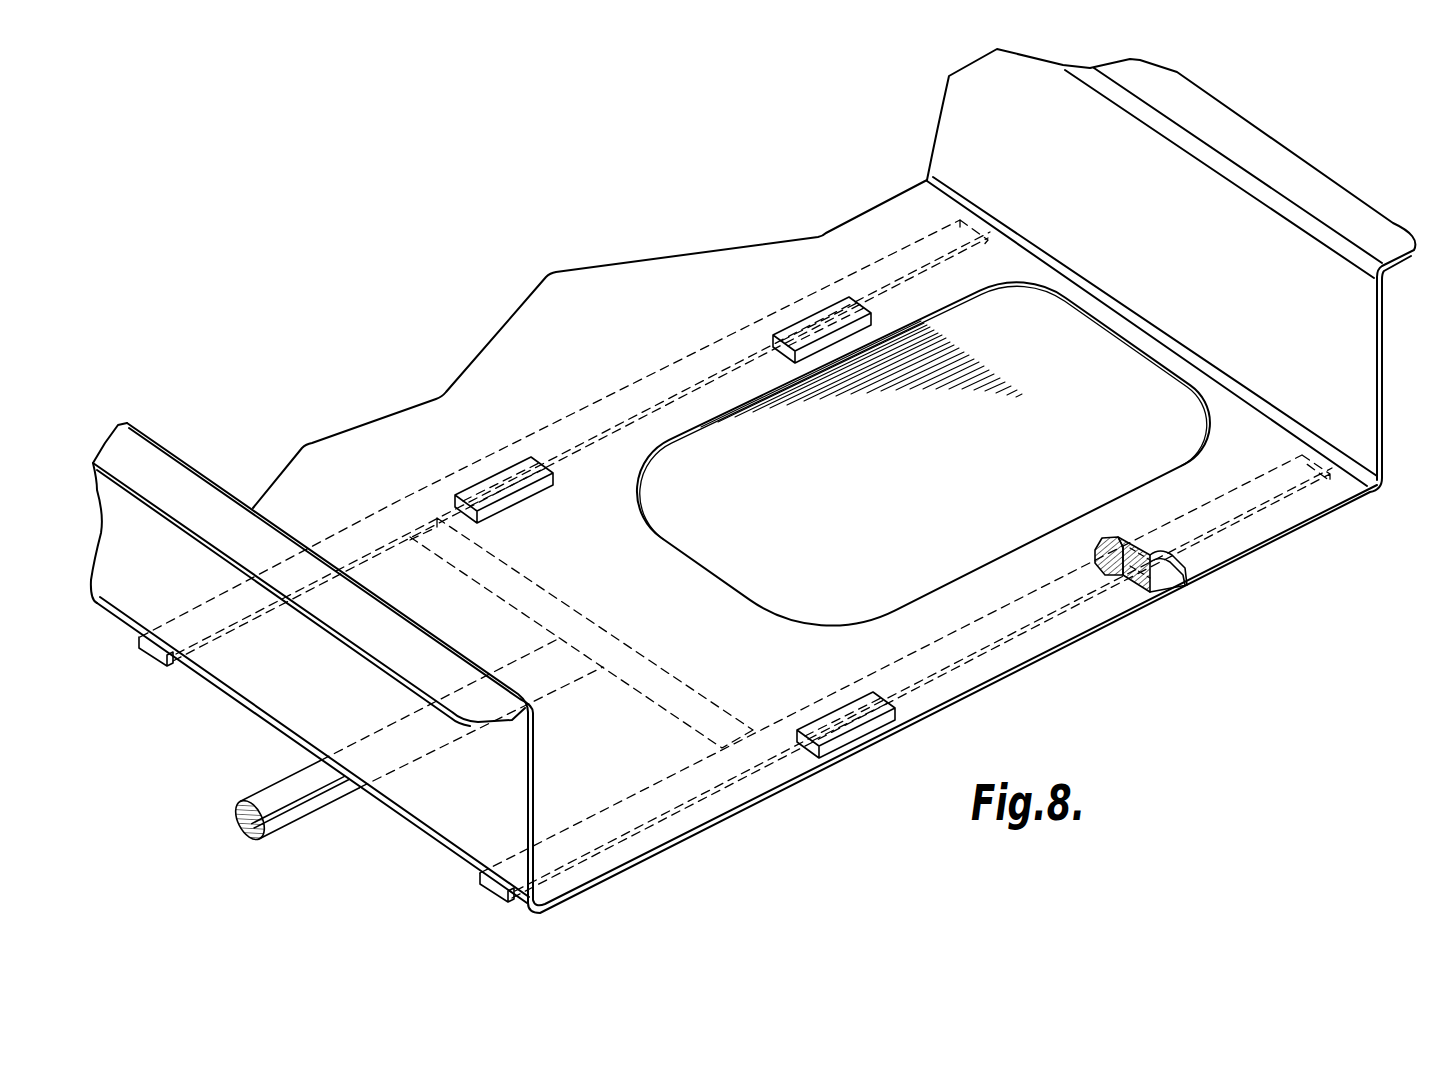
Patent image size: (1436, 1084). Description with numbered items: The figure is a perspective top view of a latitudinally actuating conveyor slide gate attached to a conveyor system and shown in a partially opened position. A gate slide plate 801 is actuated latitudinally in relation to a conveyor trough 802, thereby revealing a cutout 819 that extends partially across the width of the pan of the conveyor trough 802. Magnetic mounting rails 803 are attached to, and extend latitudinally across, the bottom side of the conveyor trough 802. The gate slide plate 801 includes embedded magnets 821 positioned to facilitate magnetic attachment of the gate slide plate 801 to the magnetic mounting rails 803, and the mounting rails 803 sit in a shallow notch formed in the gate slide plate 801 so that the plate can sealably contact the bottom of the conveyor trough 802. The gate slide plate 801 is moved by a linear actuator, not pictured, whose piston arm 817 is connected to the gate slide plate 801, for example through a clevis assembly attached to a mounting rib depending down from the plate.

The gate slide plate 801 is at (869, 500).
The conveyor trough 802 is at (648, 332).
The magnetic mounting rails 803 is at (157, 660).
The piston arm 817 is at (273, 780).
The cutout 819 is at (1111, 388).
The embedded magnets 821 is at (822, 318).